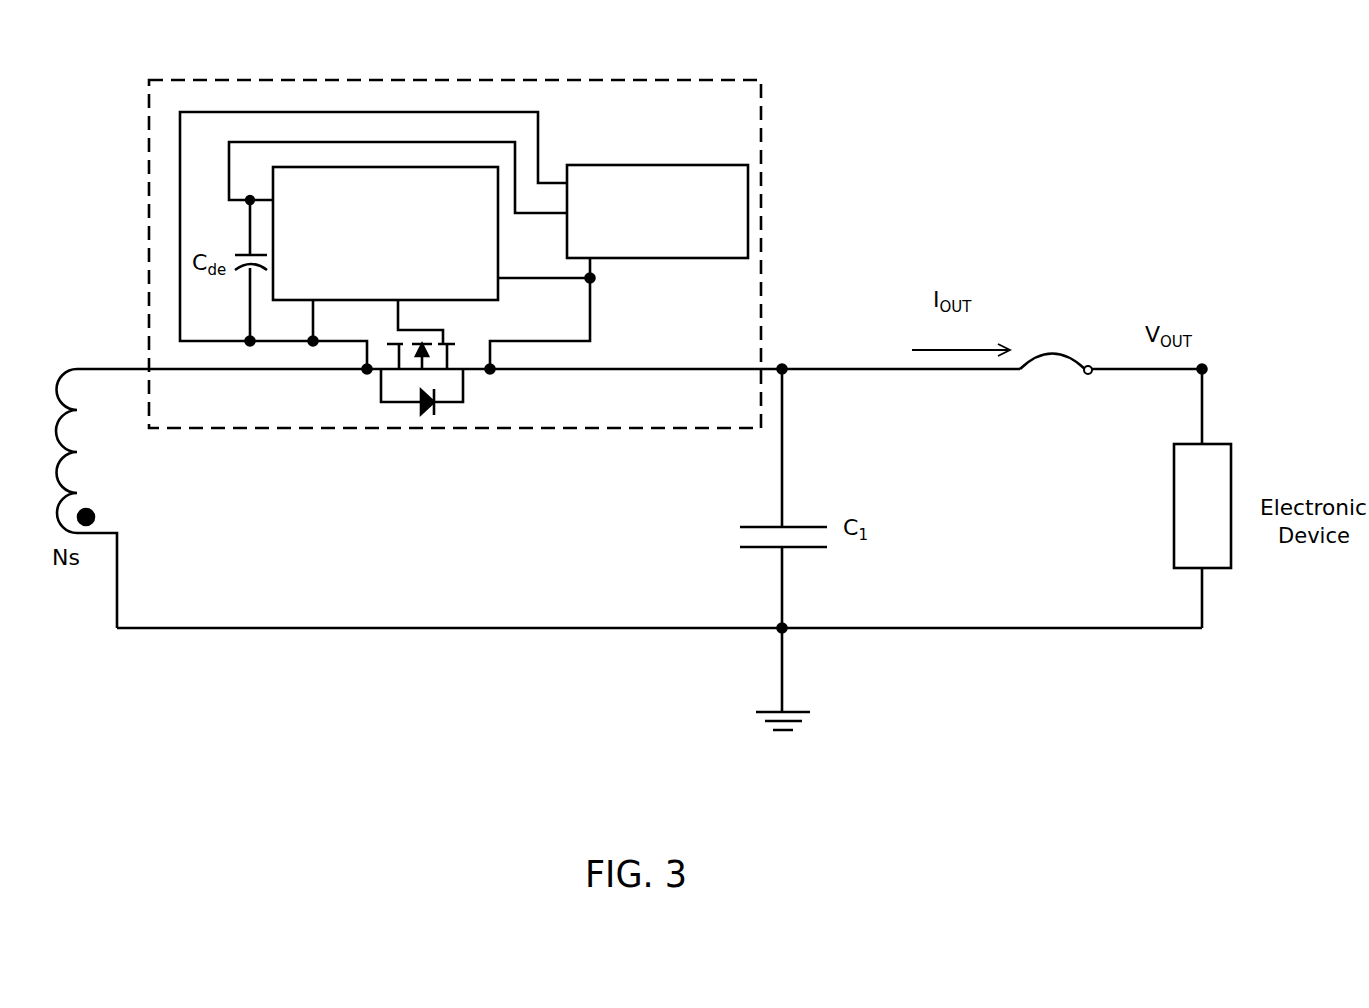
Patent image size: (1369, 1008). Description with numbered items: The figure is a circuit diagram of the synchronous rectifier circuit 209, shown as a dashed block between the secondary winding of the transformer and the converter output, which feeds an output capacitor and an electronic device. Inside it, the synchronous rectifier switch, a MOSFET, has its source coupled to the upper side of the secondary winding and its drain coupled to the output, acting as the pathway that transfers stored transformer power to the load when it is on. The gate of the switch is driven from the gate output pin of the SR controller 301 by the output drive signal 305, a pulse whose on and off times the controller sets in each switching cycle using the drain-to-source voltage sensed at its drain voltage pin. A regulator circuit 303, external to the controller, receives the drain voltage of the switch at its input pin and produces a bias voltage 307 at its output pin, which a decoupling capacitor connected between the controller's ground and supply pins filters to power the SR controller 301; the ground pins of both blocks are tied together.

The synchronous rectifier circuit 209 is at (761, 80).
The synchronous rectifier (SR) controller 301 is at (499, 297).
The regulator circuit 303 is at (665, 258).
The output drive signal 305 is at (398, 321).
The bias voltage 307 is at (514, 141).